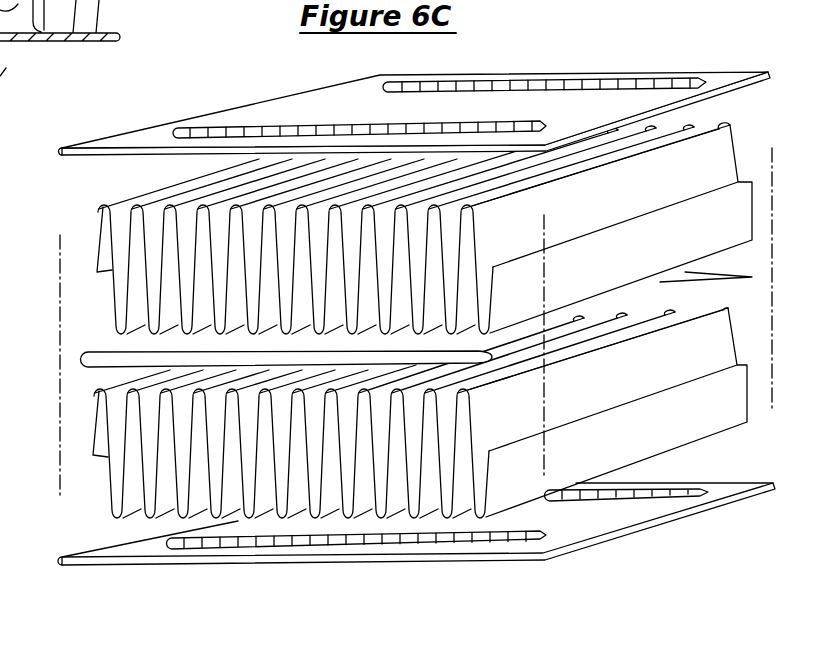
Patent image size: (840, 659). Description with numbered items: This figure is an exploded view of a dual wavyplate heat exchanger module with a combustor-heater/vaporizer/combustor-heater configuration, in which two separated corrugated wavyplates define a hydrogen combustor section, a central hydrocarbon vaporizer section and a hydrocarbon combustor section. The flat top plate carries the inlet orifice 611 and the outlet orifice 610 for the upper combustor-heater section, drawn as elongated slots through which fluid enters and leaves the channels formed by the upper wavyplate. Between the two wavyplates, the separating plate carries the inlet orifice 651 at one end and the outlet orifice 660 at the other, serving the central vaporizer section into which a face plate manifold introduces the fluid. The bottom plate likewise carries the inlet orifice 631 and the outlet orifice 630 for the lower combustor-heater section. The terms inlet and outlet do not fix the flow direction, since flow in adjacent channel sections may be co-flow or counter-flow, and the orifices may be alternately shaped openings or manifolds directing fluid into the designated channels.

The outlet orifice 610 is at (613, 78).
The inlet orifice 611 is at (173, 128).
The outlet orifice 630 is at (677, 497).
The inlet orifice 631 is at (233, 542).
The inlet orifice 651 is at (81, 360).
The outlet orifice 660 is at (756, 277).